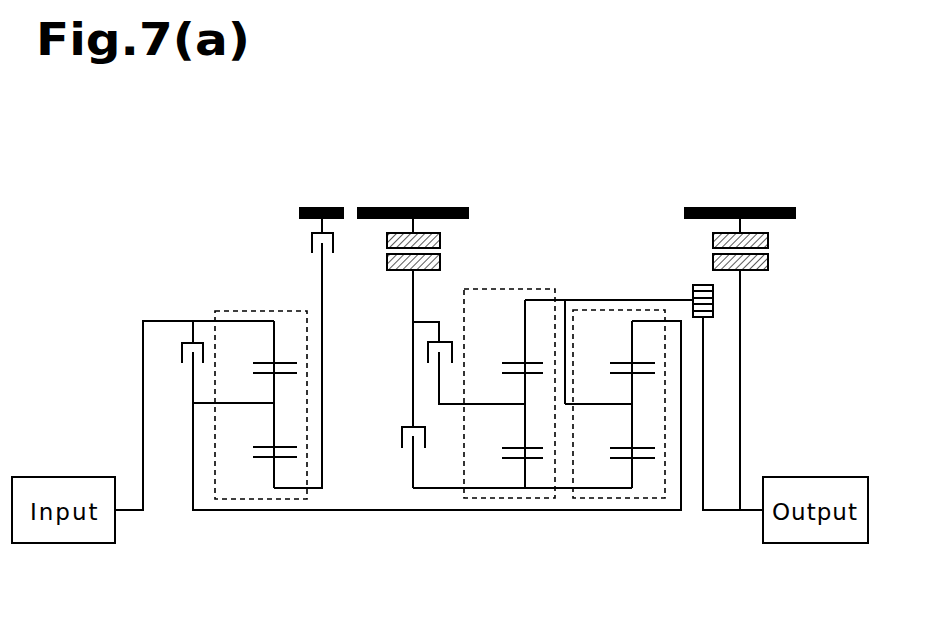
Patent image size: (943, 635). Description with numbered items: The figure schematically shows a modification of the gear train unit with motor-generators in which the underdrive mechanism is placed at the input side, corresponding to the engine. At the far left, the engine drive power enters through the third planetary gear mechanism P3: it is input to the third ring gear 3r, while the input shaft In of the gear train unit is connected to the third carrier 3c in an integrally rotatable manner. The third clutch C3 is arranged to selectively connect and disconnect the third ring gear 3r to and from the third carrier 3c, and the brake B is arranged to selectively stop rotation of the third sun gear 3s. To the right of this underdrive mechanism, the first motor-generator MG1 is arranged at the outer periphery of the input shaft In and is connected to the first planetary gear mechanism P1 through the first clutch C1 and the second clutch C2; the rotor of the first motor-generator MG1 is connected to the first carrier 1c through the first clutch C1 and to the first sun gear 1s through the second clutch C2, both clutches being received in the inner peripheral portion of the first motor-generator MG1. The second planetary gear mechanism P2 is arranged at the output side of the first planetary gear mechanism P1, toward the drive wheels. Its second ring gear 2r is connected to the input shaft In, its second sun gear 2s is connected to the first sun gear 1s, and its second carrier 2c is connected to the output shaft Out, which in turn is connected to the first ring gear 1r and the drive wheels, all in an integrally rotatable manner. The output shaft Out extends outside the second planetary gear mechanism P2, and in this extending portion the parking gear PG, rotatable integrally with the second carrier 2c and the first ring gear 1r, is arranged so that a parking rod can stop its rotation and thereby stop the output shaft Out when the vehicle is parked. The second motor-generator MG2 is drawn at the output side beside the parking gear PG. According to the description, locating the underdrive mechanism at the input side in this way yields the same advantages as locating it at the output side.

The brake B is at (312, 243).
The first motor-generator MG1 is at (427, 317).
The second motor-generator MG2 is at (755, 359).
The first clutch C1 is at (452, 352).
The second clutch C2 is at (425, 440).
The third clutch C3 is at (175, 355).
The first planetary gear mechanism P1 is at (533, 288).
The second planetary gear mechanism P2 is at (620, 308).
The third planetary gear mechanism P3 is at (243, 309).
The parking gear PG is at (693, 287).
The first ring gear 1r is at (525, 343).
The first carrier 1c is at (525, 429).
The first sun gear 1s is at (525, 479).
The second ring gear 2r is at (632, 343).
The second carrier 2c is at (632, 429).
The second sun gear 2s is at (632, 479).
The third ring gear 3r is at (274, 343).
The third carrier 3c is at (274, 399).
The third sun gear 3s is at (274, 480).
The input shaft In is at (355, 512).
The output shaft Out is at (752, 512).